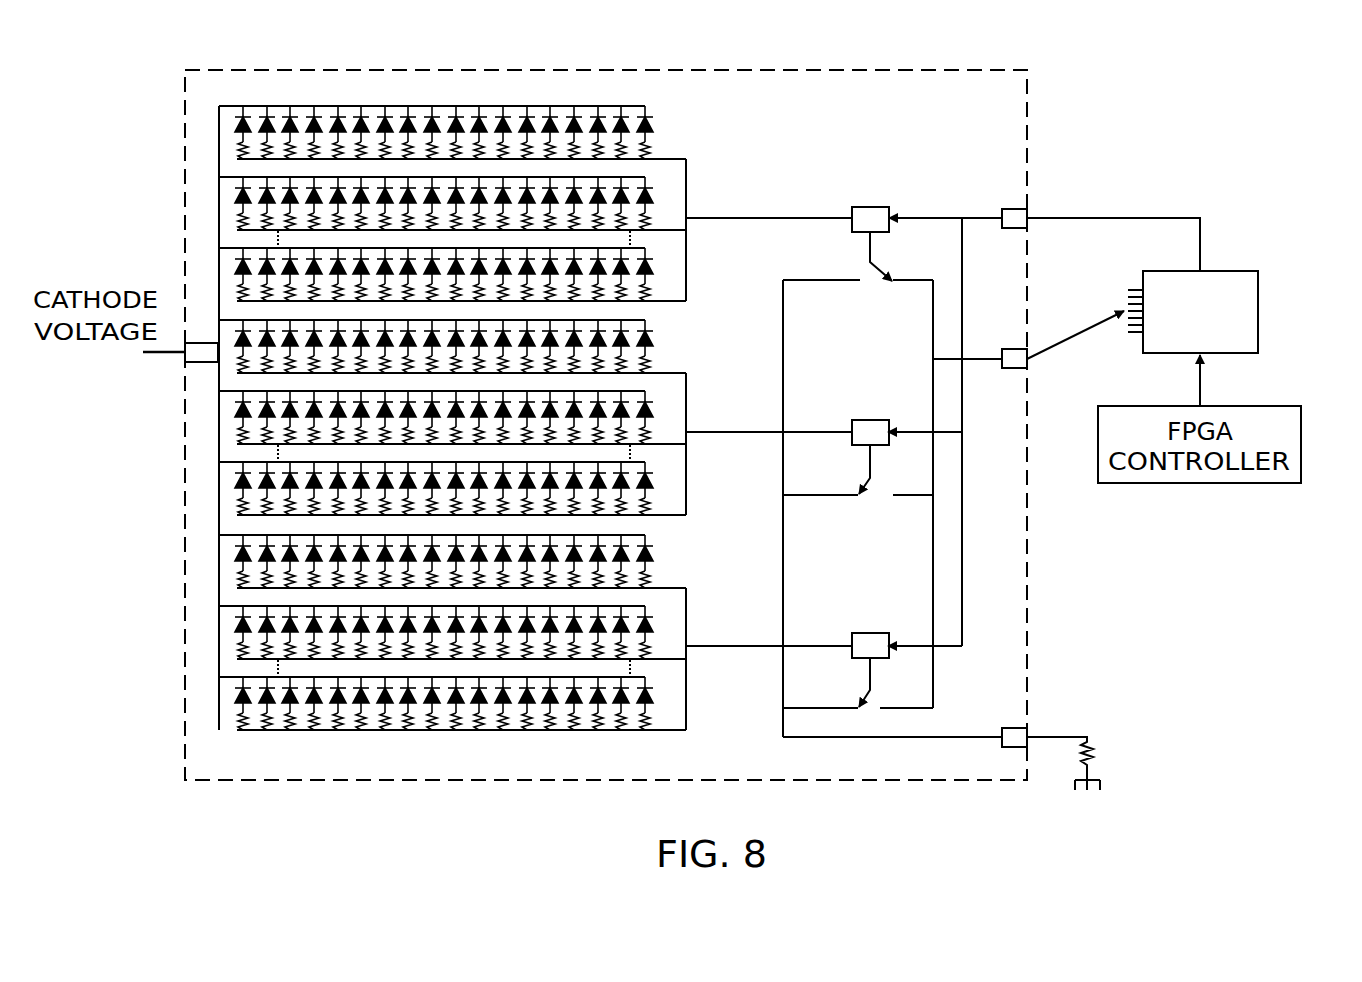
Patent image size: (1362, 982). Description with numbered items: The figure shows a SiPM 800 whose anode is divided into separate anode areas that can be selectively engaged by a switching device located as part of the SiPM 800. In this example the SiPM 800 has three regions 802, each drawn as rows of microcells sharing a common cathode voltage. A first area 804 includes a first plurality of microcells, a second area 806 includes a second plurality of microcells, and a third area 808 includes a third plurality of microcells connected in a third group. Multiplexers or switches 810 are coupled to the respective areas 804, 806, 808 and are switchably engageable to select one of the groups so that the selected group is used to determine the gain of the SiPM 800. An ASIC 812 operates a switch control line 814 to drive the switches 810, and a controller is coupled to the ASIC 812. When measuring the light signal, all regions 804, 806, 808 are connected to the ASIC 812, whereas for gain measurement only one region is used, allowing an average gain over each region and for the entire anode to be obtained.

The SiPM 800 is at (1030, 99).
The regions 802 is at (160, 203).
The first area 804 is at (713, 173).
The second area 806 is at (701, 370).
The third area 808 is at (701, 589).
The multiplexers or switches 810 is at (870, 206).
The ASIC 812 is at (1258, 312).
The switch control line 814 is at (1130, 217).